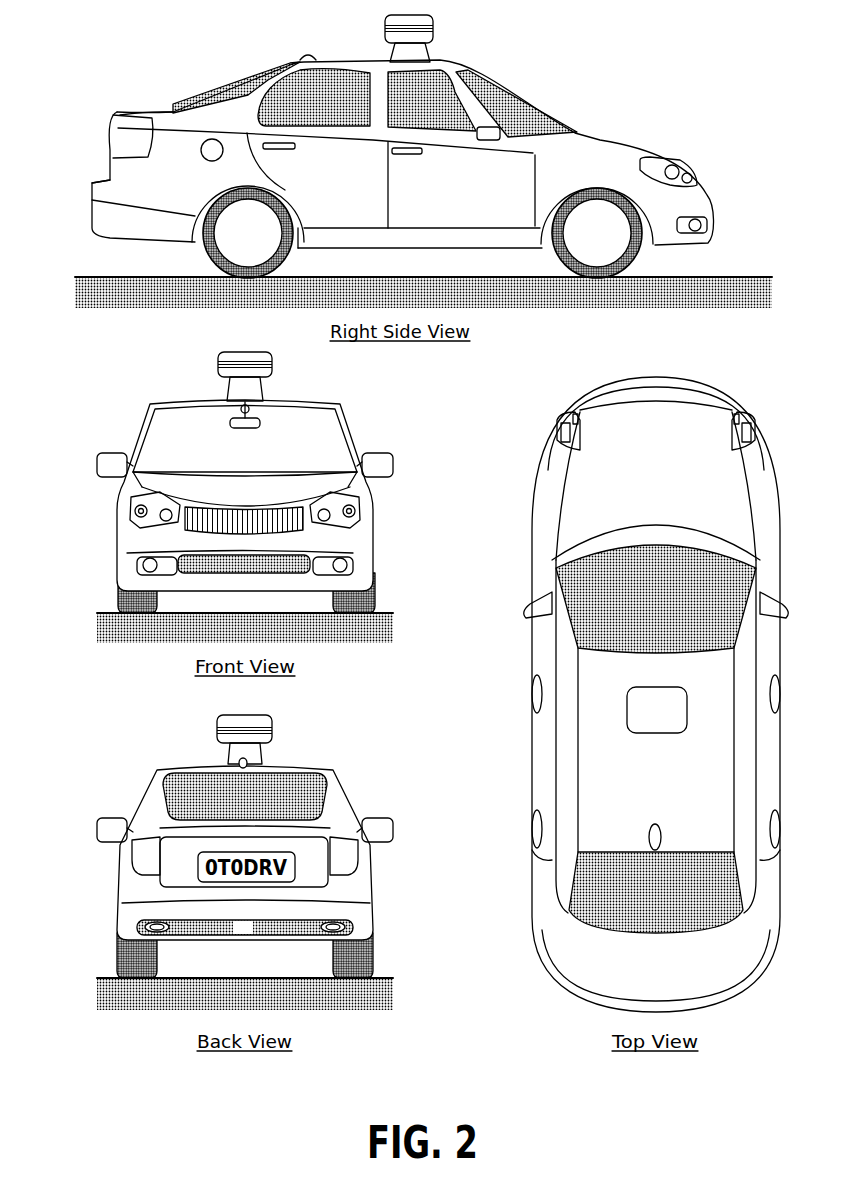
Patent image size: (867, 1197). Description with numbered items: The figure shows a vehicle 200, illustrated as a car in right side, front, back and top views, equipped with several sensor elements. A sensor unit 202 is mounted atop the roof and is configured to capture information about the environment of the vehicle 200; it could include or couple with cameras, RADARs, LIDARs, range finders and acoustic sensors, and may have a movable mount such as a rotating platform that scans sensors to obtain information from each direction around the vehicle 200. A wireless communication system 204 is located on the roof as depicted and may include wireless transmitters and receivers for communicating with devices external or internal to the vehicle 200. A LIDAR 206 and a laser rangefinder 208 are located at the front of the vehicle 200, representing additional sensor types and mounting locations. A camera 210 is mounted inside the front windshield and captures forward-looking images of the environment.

The vehicle 200 is at (88, 101).
The sensor unit 202 is at (436, 40).
The wireless communication system 204 is at (306, 54).
The LIDAR 206 is at (712, 221).
The laser rangefinder 208 is at (702, 177).
The camera 210 is at (256, 411).